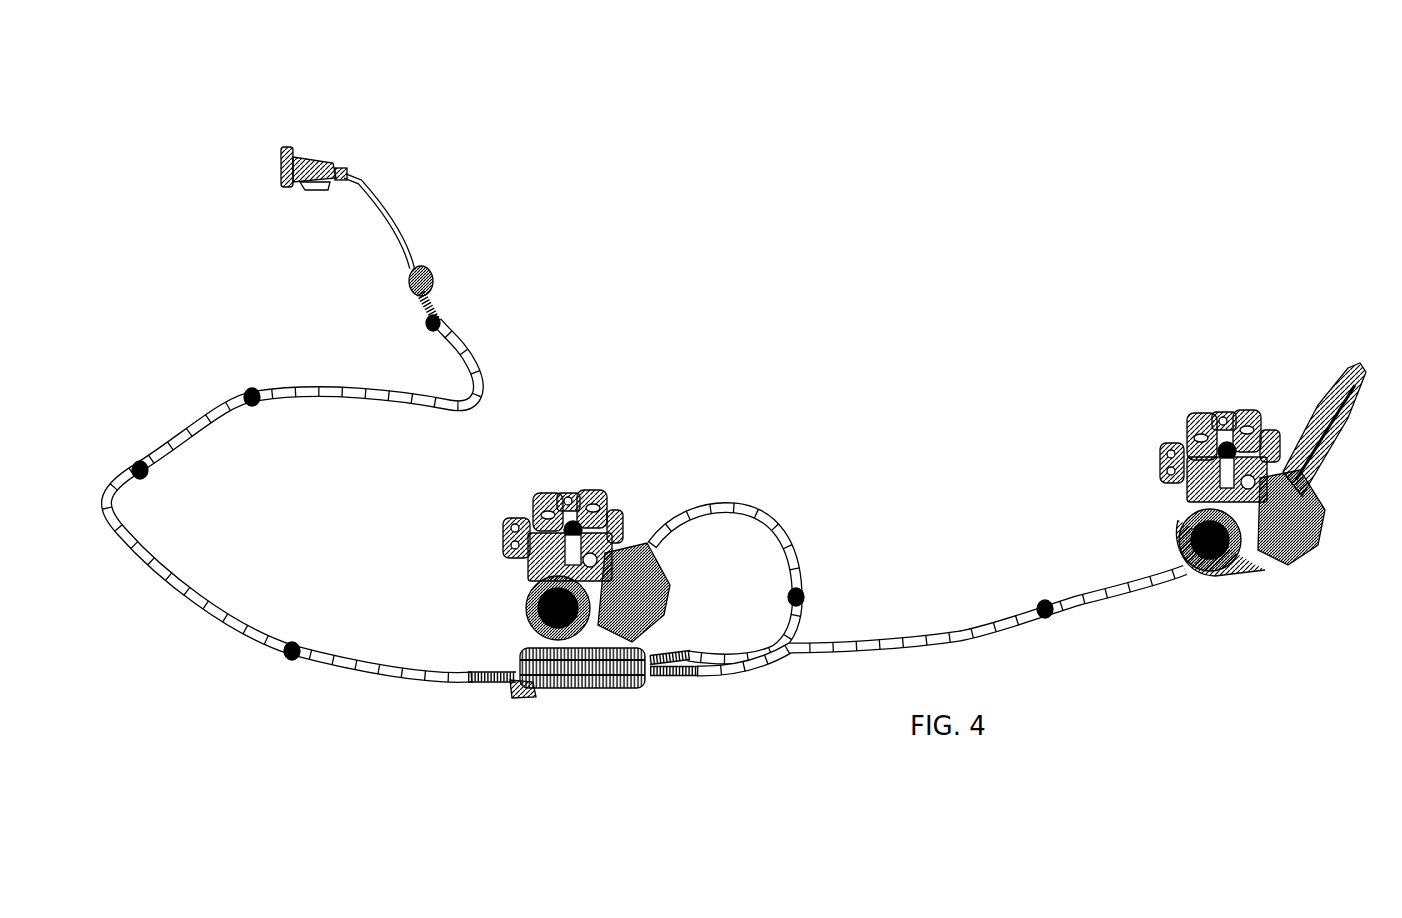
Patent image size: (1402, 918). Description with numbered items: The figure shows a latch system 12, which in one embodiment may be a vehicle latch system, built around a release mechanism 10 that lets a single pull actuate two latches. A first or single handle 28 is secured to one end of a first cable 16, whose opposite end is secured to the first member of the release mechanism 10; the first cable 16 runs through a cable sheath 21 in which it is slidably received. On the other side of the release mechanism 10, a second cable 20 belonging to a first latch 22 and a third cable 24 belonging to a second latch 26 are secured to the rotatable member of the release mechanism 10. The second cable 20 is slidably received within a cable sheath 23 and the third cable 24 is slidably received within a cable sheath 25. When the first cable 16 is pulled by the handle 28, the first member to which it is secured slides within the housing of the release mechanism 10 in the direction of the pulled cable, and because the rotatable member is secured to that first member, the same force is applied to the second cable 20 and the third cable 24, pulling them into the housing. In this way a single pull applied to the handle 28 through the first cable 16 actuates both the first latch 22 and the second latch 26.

The release mechanism 10 is at (575, 696).
The latch system 12 is at (783, 362).
The first cable 16 is at (486, 674).
The second cable 20 is at (668, 677).
The cable sheath 21 is at (296, 390).
The first latch 22 is at (603, 497).
The cable sheath 23 is at (782, 536).
The third cable 24 is at (664, 657).
The cable sheath 25 is at (897, 640).
The second latch 26 is at (1200, 450).
The first or single handle 28 is at (318, 162).